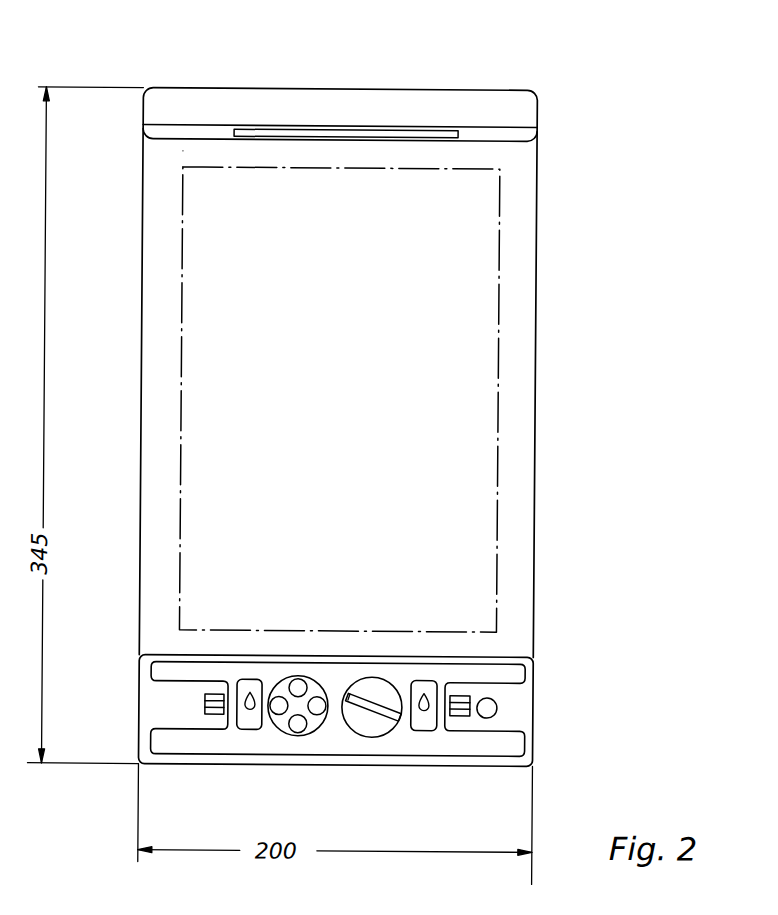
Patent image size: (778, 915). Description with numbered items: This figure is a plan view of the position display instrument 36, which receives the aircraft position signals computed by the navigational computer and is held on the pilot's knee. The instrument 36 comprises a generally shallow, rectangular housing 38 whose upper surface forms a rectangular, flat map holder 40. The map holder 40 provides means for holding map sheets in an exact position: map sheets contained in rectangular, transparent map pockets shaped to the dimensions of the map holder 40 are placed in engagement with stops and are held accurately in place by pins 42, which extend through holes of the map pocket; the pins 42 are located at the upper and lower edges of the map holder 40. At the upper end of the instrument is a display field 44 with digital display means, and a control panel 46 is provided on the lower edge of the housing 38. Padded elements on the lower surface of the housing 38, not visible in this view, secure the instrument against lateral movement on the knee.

The position display instrument 36 is at (551, 365).
The housing 38 is at (527, 271).
The map holder 40 is at (362, 383).
The pins 42 is at (339, 157).
The display field 44 is at (431, 136).
The control panel 46 is at (412, 745).